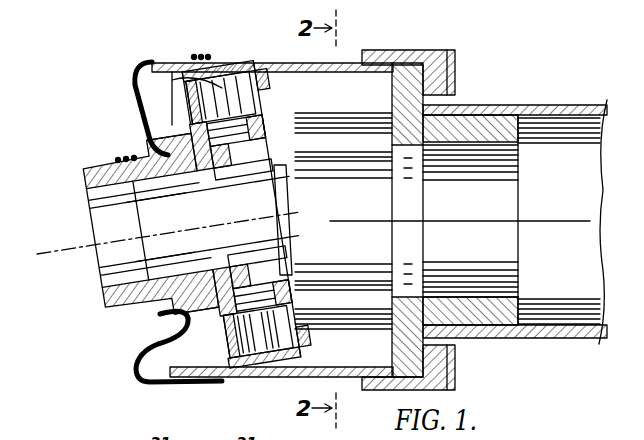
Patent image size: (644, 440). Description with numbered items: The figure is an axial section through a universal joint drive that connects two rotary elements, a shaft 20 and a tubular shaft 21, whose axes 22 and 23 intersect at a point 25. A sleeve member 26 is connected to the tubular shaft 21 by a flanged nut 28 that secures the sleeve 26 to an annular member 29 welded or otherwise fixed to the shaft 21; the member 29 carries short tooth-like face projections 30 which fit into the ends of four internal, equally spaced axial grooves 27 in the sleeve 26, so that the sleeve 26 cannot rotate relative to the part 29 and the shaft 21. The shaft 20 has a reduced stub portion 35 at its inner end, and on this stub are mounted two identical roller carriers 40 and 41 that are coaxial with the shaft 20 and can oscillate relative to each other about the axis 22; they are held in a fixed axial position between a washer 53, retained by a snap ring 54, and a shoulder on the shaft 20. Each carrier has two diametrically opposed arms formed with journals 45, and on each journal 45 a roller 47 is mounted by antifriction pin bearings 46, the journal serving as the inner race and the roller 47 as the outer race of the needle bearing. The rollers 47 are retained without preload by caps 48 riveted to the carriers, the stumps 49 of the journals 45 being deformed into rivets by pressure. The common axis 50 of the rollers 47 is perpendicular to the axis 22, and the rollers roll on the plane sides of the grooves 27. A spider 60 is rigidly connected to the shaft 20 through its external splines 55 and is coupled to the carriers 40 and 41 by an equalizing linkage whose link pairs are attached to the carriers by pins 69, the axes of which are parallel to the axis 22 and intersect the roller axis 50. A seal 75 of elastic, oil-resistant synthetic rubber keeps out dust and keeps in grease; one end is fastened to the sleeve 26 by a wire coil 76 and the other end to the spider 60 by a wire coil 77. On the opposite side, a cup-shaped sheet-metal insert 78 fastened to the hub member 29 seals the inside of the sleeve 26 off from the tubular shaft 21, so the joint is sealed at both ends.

The rotary element 20 is at (153, 168).
The tubular shaft 21 is at (506, 108).
The axis of shaft 22 is at (76, 251).
The axis of shaft 23 is at (535, 221).
The intersection point 25 is at (252, 201).
The sleeve member 26 is at (283, 64).
The axial grooves 27 is at (354, 349).
The flanged nut 28 is at (440, 50).
The annular member 29 is at (470, 126).
The face projections 30 is at (392, 97).
The reduced stub portion 35 is at (288, 229).
The roller carrier 40 is at (289, 248).
The roller carrier 41 is at (300, 284).
The journals 45 is at (312, 91).
The antifriction pin bearings 46 is at (256, 88).
The roller 47 is at (263, 106).
The caps 48 is at (184, 81).
The stumps 49 is at (238, 68).
The common axis of the rollers 50 is at (268, 351).
The washer 53 is at (288, 172).
The snap ring 54 is at (291, 210).
The external splines 55 is at (185, 190).
The spider 60 is at (92, 172).
The pin 69 is at (266, 154).
The seal 75 is at (150, 63).
The wire coil 76 is at (206, 55).
The wire coil 77 is at (132, 157).
The cup-shaped insert 78 is at (426, 220).